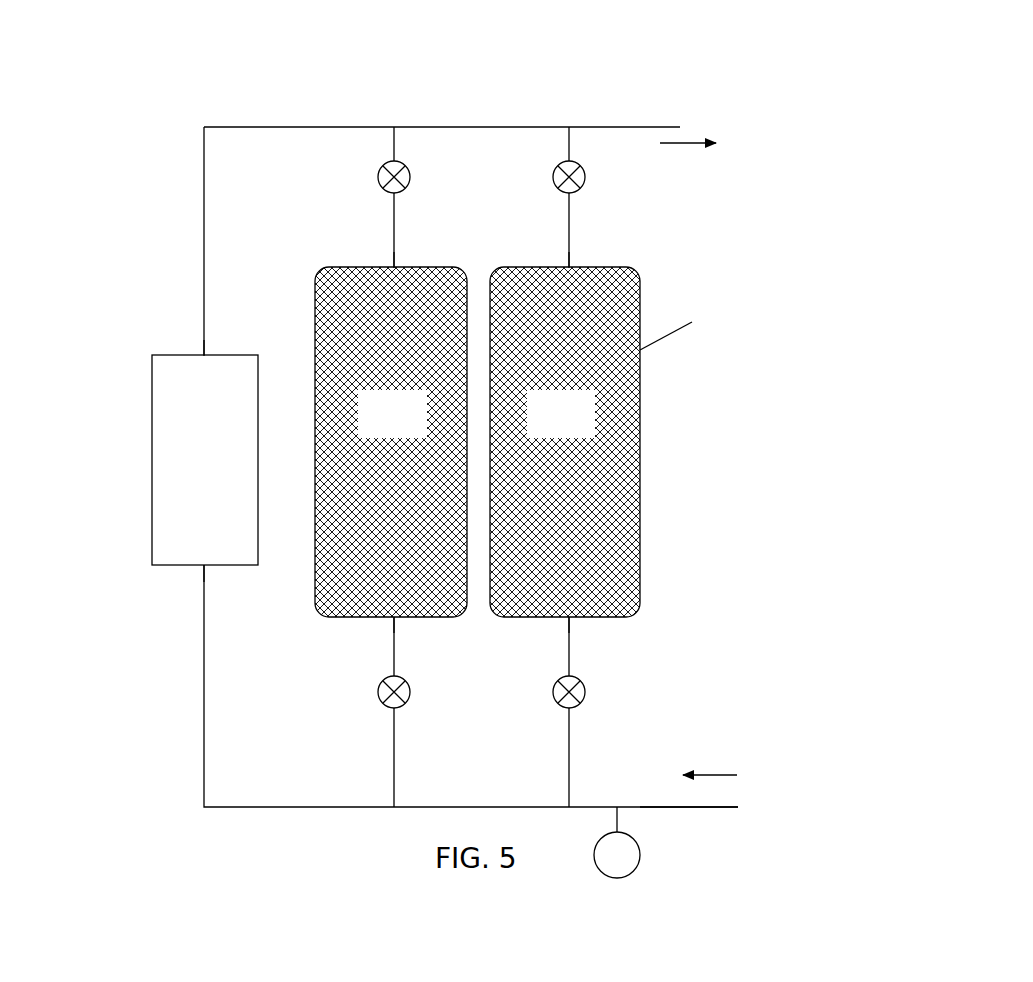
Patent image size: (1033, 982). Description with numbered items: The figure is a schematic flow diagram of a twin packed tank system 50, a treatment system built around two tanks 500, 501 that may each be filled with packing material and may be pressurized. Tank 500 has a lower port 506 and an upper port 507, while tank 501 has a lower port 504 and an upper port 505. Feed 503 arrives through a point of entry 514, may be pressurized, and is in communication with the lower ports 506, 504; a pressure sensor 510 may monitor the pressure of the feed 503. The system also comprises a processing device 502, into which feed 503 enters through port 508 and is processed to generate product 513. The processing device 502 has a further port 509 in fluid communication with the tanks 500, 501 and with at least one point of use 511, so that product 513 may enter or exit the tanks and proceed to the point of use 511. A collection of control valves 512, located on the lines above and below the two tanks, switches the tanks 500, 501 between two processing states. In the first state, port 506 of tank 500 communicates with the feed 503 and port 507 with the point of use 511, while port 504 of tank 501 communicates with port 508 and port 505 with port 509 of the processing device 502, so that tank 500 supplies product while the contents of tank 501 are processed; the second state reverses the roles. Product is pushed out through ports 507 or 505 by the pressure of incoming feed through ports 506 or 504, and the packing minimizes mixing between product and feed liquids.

The tank system 50 is at (289, 74).
The tank 500 is at (391, 442).
The tank 501 is at (651, 442).
The processing device 502 is at (186, 474).
The feed 503 is at (716, 829).
The port 504 is at (578, 621).
The port 505 is at (575, 263).
The port 506 is at (402, 622).
The port 507 is at (385, 263).
The port 508 is at (211, 568).
The port 509 is at (200, 352).
The pressure sensor 510 is at (639, 876).
The point of use 511 is at (714, 125).
The control valve 512 is at (566, 156).
The product 513 is at (199, 191).
The point of entry 514 is at (738, 774).